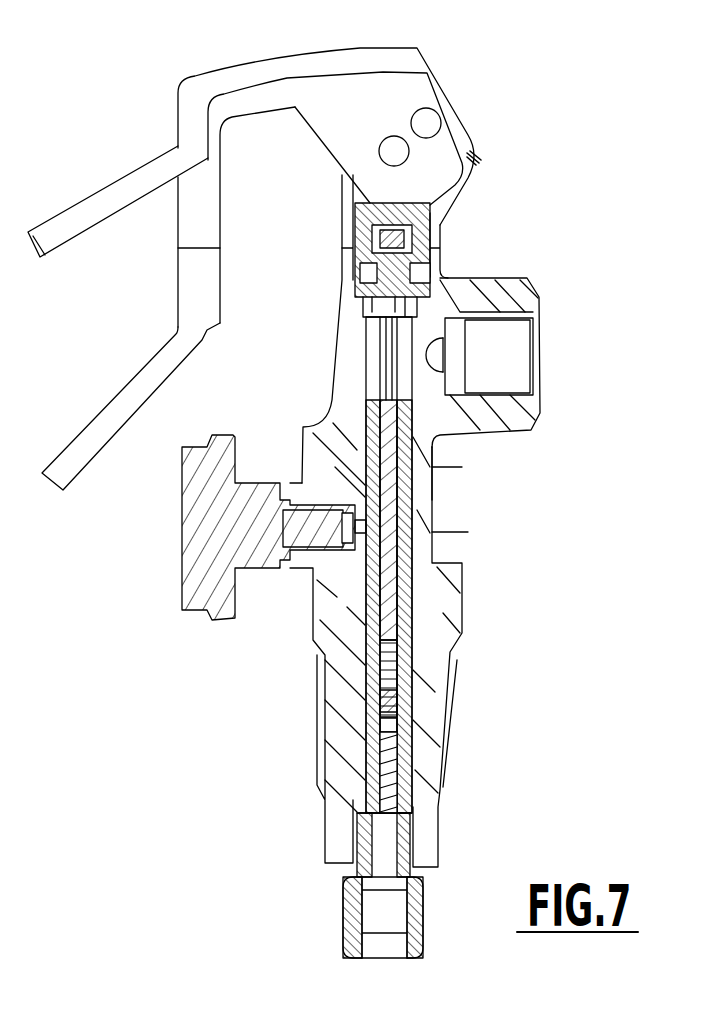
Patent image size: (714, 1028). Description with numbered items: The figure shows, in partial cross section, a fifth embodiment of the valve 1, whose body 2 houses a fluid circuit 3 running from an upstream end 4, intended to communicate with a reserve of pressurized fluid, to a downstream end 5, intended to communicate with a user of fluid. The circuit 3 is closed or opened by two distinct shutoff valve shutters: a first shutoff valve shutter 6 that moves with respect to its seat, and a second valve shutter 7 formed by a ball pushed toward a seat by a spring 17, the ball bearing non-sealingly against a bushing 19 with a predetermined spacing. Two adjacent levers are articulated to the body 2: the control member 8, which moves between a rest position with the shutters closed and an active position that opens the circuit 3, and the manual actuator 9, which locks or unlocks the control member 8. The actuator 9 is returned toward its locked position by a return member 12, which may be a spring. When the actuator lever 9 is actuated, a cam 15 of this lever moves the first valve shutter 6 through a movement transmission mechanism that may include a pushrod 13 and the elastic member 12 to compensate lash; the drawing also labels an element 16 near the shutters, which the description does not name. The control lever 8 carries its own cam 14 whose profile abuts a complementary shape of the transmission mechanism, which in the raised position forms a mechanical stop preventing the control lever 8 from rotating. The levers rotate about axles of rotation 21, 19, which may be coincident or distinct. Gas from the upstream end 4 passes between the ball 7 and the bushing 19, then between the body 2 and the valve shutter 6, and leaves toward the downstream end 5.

The valve 1 is at (592, 671).
The body 2 is at (317, 652).
The fluid circuit 3 is at (412, 545).
The upstream end 4 is at (367, 963).
The downstream end 5 is at (543, 373).
The shutoff valve shutter 6 is at (433, 453).
The second valve shutter 7 is at (365, 758).
The control member 8 is at (112, 402).
The manual actuator 9 is at (84, 197).
The return member 12 is at (453, 270).
The pushrod 13 is at (437, 376).
The cam 14 is at (468, 162).
The cam 15 is at (474, 200).
The seal 16 is at (365, 695).
The spring 17 is at (365, 790).
The bushing 19 is at (431, 122).
The axle of rotation 21 is at (387, 146).